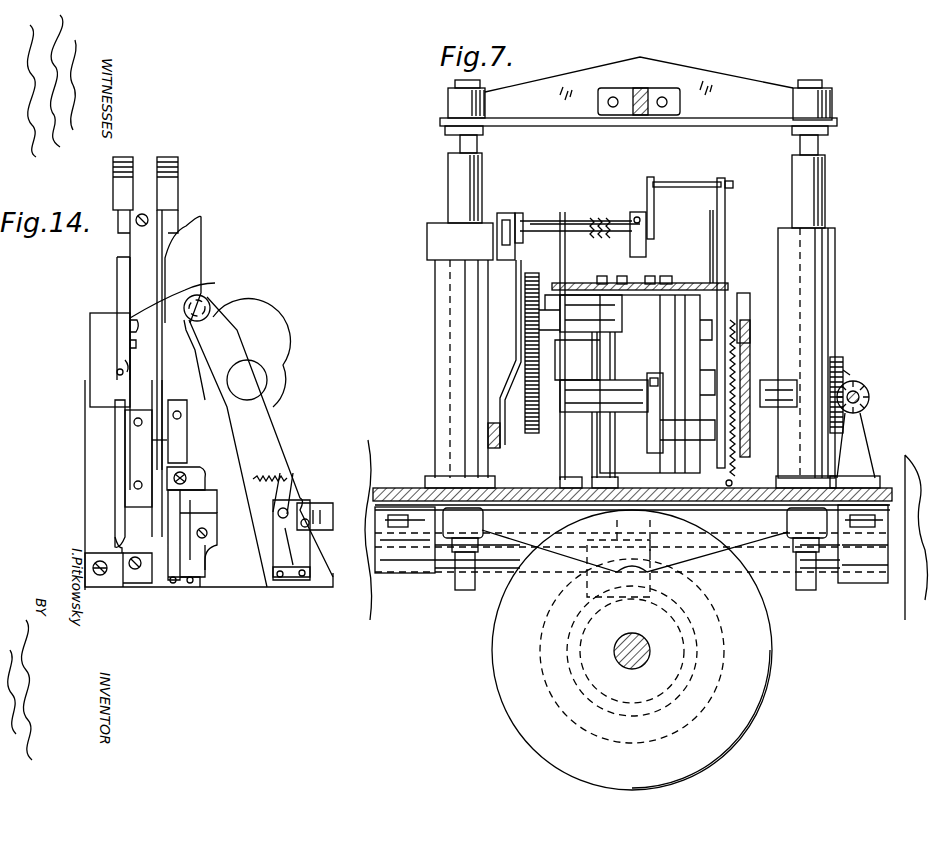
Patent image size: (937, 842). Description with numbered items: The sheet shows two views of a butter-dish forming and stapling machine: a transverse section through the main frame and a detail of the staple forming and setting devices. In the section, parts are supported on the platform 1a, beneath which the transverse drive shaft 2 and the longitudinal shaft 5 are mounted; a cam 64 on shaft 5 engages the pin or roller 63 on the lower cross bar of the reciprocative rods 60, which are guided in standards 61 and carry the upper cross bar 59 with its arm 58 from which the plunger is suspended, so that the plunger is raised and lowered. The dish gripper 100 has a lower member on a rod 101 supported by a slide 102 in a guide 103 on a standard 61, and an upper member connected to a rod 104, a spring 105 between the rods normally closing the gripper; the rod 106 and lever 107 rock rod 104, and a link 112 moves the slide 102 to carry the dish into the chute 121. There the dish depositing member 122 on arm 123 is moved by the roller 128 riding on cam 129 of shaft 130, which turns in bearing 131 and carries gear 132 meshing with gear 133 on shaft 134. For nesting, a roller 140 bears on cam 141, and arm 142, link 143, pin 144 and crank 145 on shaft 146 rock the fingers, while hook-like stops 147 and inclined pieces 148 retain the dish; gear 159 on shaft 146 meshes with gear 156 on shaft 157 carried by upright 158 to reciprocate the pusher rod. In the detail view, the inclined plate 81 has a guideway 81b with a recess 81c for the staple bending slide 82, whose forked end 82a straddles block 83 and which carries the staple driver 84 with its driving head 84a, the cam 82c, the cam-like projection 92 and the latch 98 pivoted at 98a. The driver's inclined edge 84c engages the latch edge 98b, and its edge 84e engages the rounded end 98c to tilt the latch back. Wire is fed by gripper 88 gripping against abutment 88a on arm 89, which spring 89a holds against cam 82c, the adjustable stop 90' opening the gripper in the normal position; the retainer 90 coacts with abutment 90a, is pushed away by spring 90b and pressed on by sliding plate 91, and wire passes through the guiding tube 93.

In FIG. 7, the platform 1a is at (378, 490).
In FIG. 7, the drive shaft 2 is at (490, 578).
In FIG. 7, the shaft 5 is at (614, 645).
In FIG. 7, the arm 58 is at (655, 85).
In FIG. 7, the cross bar 59 is at (705, 85).
In FIG. 7, the reciprocative rods 60 is at (458, 147).
In FIG. 7, the standards 61 is at (440, 303).
In FIG. 7, the pin or roller 63 is at (635, 549).
In FIG. 7, the cam 64 is at (560, 596).
In FIG. 14, the plate 81 is at (252, 587).
In FIG. 14, the guideway 81b is at (118, 495).
In FIG. 14, the recess 81c is at (115, 430).
In FIG. 14, the staple bending slide 82 is at (124, 286).
In FIG. 14, the forked end 82a is at (137, 519).
In FIG. 14, the cam 82c is at (183, 269).
In FIG. 14, the block 83 is at (130, 588).
In FIG. 14, the staple driver 84 is at (140, 248).
In FIG. 14, the driving head 84a is at (234, 300).
In FIG. 14, the inclined edge 84c is at (130, 320).
In FIG. 14, the inclined edge 84e is at (117, 393).
In FIG. 14, the wire gripper 88 is at (310, 540).
In FIG. 14, the abutment 88a is at (298, 580).
In FIG. 14, the arm 89 is at (271, 486).
In FIG. 14, the spring 89a is at (245, 325).
In FIG. 14, the wire gripper or retainer 90 is at (205, 535).
In FIG. 14, the adjustable stop 90' is at (320, 505).
In FIG. 14, the abutment 90a is at (200, 587).
In FIG. 14, the spring 90b is at (175, 590).
In FIG. 14, the sliding plate 91 is at (183, 473).
In FIG. 14, the cam-like projection 92 is at (162, 442).
In FIG. 14, the wire guiding tube 93 is at (152, 590).
In FIG. 14, the latch 98 is at (118, 324).
In FIG. 14, the pivot 98a is at (124, 362).
In FIG. 14, the inclined edge 98b is at (182, 293).
In FIG. 14, the rounded end portion 98c is at (116, 375).
In FIG. 7, the gripper 100 is at (648, 250).
In FIG. 7, the rod 101 is at (596, 232).
In FIG. 7, the slide 102 is at (517, 215).
In FIG. 7, the guide 103 is at (507, 213).
In FIG. 7, the rod 104 is at (575, 220).
In FIG. 7, the spring 105 is at (612, 232).
In FIG. 7, the rod 106 is at (500, 380).
In FIG. 7, the lever 107 is at (488, 435).
In FIG. 7, the link 112 is at (525, 228).
In FIG. 7, the chute or receptacle 121 is at (690, 285).
In FIG. 7, the dish depositing member 122 is at (650, 177).
In FIG. 7, the arm 123 is at (718, 258).
In FIG. 7, the roller or projection 128 is at (750, 322).
In FIG. 7, the cam 129 is at (750, 370).
In FIG. 7, the shaft 130 is at (760, 385).
In FIG. 7, the bearing 131 is at (770, 410).
In FIG. 7, the gear 132 is at (848, 372).
In FIG. 7, the gear 133 is at (870, 395).
In FIG. 7, the shaft 134 is at (866, 410).
In FIG. 7, the roller 140 is at (715, 322).
In FIG. 7, the cam 141 is at (735, 465).
In FIG. 7, the arm 142 is at (710, 338).
In FIG. 7, the link 143 is at (693, 382).
In FIG. 7, the pin 144 is at (687, 423).
In FIG. 7, the crank 145 is at (655, 435).
In FIG. 7, the shaft 146 is at (552, 440).
In FIG. 7, the hook-like stops 147 is at (618, 272).
In FIG. 7, the inclined pieces 148 is at (661, 272).
In FIG. 7, the gear 156 is at (540, 272).
In FIG. 7, the shaft 157 is at (545, 318).
In FIG. 7, the upright 158 is at (567, 335).
In FIG. 7, the gear 159 is at (525, 432).